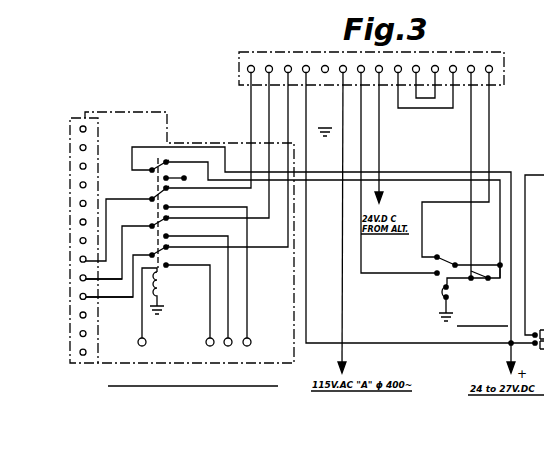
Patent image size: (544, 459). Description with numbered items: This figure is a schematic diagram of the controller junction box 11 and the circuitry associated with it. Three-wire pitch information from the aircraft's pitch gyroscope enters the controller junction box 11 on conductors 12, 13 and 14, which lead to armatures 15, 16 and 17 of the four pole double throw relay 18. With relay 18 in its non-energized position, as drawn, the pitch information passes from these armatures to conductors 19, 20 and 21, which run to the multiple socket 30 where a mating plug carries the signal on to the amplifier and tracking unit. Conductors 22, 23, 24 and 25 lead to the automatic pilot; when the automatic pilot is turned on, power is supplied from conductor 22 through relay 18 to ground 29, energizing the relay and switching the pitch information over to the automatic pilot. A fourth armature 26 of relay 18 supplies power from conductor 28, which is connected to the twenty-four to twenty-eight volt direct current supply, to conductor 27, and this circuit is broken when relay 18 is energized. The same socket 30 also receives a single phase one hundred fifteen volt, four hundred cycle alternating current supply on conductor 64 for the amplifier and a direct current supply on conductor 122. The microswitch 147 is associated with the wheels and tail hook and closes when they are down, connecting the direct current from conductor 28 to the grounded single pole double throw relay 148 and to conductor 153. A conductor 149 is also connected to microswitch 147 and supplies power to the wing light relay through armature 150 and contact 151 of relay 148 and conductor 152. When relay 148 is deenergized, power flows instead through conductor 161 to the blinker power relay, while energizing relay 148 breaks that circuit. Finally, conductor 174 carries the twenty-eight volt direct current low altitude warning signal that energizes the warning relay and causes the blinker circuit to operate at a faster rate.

The controller junction box 11 is at (117, 108).
The conductor 12 is at (118, 197).
The conductor 13 is at (122, 272).
The conductor 14 is at (102, 299).
The armature 15 is at (157, 195).
The armature 16 is at (155, 222).
The armature 17 is at (155, 253).
The four pole double throw relay 18 is at (160, 284).
The conductor 19 is at (202, 189).
The conductor 20 is at (202, 218).
The conductor 21 is at (220, 246).
The conductor 22 is at (141, 326).
The conductor 23 is at (205, 334).
The conductor 24 is at (232, 344).
The conductor 25 is at (250, 344).
The armature 26 is at (162, 164).
The conductor 27 is at (427, 181).
The conductor 28 is at (423, 155).
The ground 29 is at (162, 314).
The multiple socket 30 is at (508, 66).
The conductor 64 is at (337, 250).
The conductor 122 is at (417, 342).
The microswitch 147 is at (487, 278).
The single pole double throw relay 148 is at (440, 290).
The conductor 149 is at (496, 256).
The armature 150 is at (456, 253).
The contact 151 is at (434, 274).
The conductor 152 is at (367, 273).
The conductor 153 is at (467, 125).
The conductor 161 is at (497, 119).
The conductor 174 is at (380, 145).